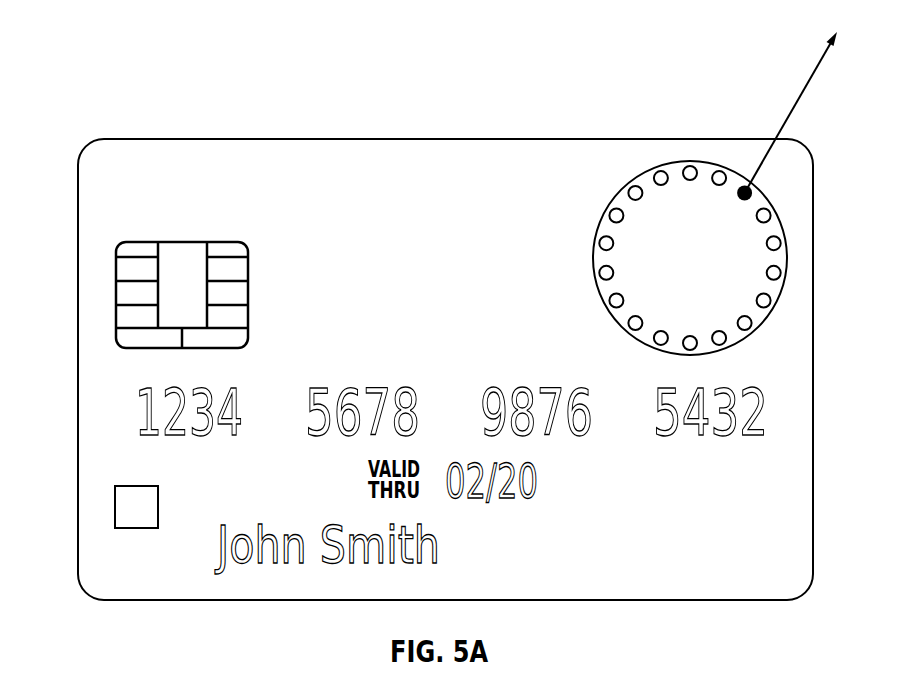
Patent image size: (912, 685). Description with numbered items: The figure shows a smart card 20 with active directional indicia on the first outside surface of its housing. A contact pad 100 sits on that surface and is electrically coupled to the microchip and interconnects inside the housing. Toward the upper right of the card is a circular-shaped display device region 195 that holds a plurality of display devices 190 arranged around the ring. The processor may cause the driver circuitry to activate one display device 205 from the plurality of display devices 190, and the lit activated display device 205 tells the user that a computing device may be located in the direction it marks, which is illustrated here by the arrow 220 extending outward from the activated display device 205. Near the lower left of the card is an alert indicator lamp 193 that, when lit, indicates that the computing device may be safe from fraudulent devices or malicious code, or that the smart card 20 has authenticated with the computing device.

The smart card 20 is at (97, 105).
The contact pad 100 is at (116, 297).
The alert indicator lamp 193 is at (115, 510).
The display device region 195 is at (639, 181).
The display devices 190 is at (719, 171).
The activated display device 205 is at (749, 189).
The arrow 220 is at (815, 70).